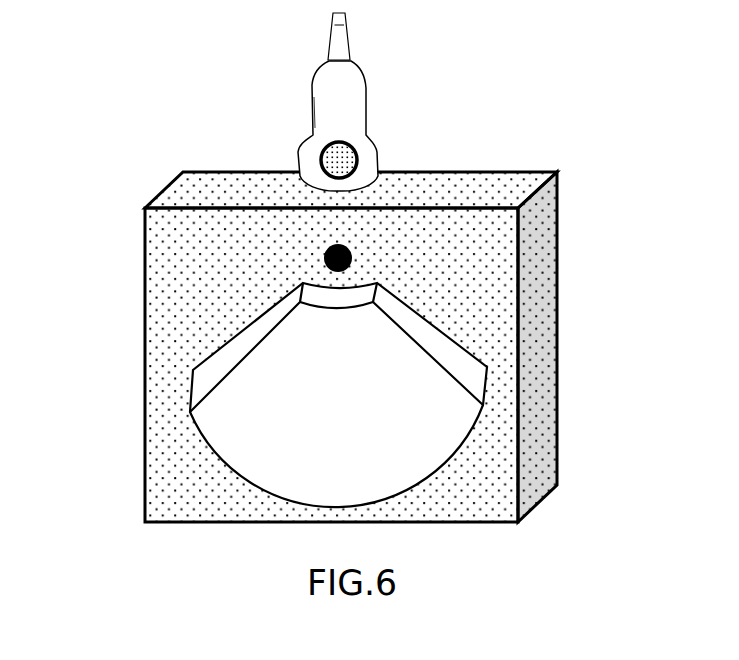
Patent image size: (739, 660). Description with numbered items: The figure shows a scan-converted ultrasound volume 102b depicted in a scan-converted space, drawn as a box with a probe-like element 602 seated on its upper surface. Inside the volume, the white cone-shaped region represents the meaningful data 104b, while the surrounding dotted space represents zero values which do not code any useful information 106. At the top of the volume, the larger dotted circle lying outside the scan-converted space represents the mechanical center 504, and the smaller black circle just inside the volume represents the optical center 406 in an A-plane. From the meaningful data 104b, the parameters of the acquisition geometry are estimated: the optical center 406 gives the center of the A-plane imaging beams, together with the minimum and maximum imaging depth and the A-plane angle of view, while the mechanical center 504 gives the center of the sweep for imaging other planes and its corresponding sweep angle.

The ultrasound probe 602 is at (329, 60).
The mechanical center 504 is at (358, 158).
The optical center 406 is at (324, 256).
The zero values 106 is at (482, 275).
The scan-converted ultrasound volume 102b is at (146, 417).
The meaningful data 104b is at (453, 442).